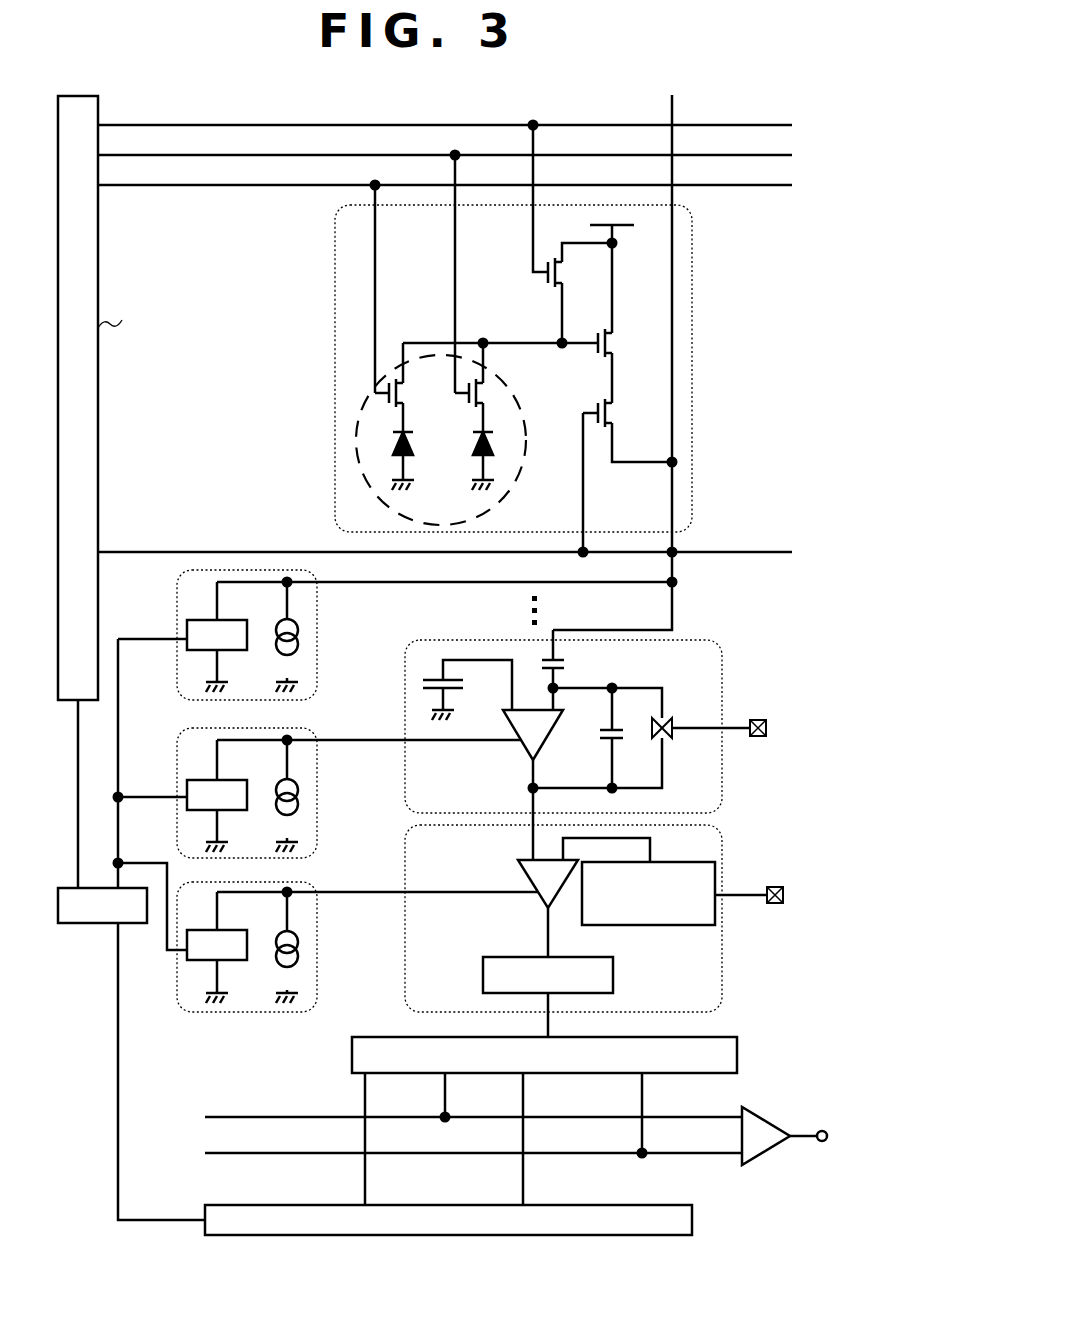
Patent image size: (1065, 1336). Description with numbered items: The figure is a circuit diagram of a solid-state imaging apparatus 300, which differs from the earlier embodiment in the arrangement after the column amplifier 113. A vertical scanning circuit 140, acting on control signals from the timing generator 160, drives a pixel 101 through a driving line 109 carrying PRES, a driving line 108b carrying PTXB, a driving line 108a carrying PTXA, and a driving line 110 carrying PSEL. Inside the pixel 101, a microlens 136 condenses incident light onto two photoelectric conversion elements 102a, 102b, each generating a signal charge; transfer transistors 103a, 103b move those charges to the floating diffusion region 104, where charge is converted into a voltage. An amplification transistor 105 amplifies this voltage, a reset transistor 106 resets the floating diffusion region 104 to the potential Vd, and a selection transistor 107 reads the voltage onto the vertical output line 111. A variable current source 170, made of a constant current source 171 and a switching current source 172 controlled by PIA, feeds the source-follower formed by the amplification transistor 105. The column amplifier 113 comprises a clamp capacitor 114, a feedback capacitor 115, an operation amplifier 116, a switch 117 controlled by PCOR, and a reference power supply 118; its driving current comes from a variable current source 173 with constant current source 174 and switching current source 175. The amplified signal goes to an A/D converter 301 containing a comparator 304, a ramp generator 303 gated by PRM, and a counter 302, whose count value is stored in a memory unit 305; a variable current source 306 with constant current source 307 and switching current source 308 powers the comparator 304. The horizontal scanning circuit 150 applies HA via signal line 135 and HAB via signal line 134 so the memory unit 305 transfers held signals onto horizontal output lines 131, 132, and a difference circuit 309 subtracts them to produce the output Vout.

The solid-state imaging apparatus 300 is at (793, 107).
The vertical scanning circuit 140 is at (95, 392).
The driving line 109 is at (233, 126).
The driving line 108b is at (233, 156).
The driving line 108a is at (233, 186).
The driving line 110 is at (233, 553).
The pixel 101 is at (335, 272).
The reset transistor 106 is at (544, 277).
The floating diffusion region 104 is at (555, 340).
The amplification transistor 105 is at (612, 340).
The selection transistor 107 is at (612, 423).
The vertical output line 111 is at (674, 502).
The transfer transistor 103a is at (404, 393).
The transfer transistor 103b is at (485, 397).
The photoelectric conversion element 102a is at (407, 450).
The photoelectric conversion element 102b is at (487, 450).
The microlens 136 is at (356, 468).
The variable current source 170 is at (395, 635).
The constant current source 171 is at (276, 628).
The switching current source 172 is at (228, 652).
The variable current source 173 is at (317, 793).
The constant current source 174 is at (276, 788).
The switching current source 175 is at (228, 812).
The variable current source 306 is at (326, 935).
The constant current source 307 is at (276, 938).
The switching current source 308 is at (228, 962).
The timing generator 160 is at (78, 923).
The column amplifier 113 is at (722, 666).
The clamp capacitor 114 is at (565, 668).
The feedback capacitor 115 is at (602, 740).
The operation amplifier 116 is at (528, 758).
The switch 117 is at (670, 738).
The reference power supply 118 is at (455, 686).
The A/D converter 301 is at (722, 843).
The counter 302 is at (483, 977).
The ramp generator 303 is at (636, 925).
The comparator 304 is at (543, 902).
The memory unit 305 is at (737, 1057).
The horizontal output line 131 is at (238, 1118).
The horizontal output line 132 is at (238, 1154).
The signal line 134 is at (524, 1138).
The signal line 135 is at (366, 1138).
The difference circuit 309 is at (770, 1118).
The horizontal scanning circuit 150 is at (588, 1205).